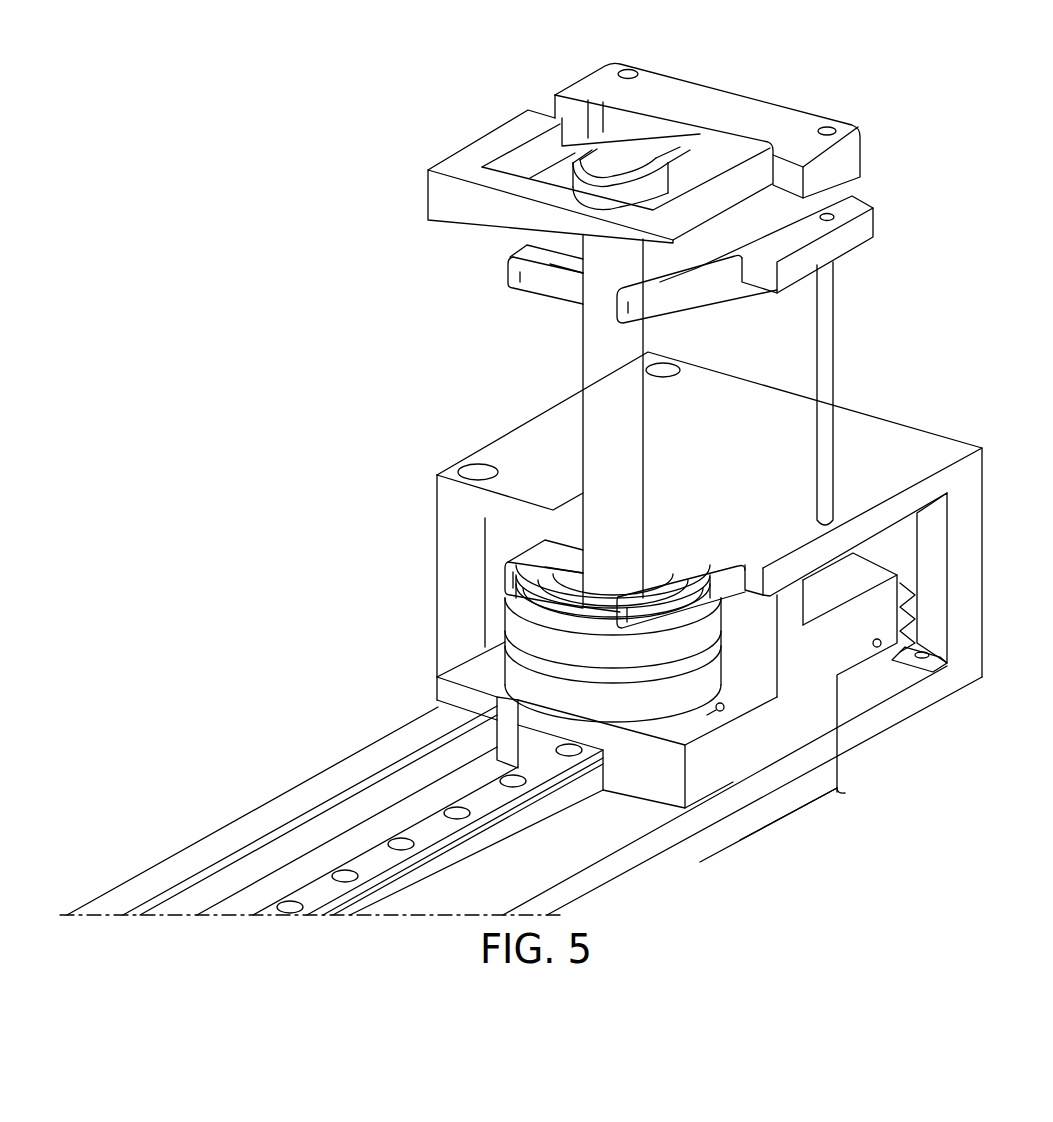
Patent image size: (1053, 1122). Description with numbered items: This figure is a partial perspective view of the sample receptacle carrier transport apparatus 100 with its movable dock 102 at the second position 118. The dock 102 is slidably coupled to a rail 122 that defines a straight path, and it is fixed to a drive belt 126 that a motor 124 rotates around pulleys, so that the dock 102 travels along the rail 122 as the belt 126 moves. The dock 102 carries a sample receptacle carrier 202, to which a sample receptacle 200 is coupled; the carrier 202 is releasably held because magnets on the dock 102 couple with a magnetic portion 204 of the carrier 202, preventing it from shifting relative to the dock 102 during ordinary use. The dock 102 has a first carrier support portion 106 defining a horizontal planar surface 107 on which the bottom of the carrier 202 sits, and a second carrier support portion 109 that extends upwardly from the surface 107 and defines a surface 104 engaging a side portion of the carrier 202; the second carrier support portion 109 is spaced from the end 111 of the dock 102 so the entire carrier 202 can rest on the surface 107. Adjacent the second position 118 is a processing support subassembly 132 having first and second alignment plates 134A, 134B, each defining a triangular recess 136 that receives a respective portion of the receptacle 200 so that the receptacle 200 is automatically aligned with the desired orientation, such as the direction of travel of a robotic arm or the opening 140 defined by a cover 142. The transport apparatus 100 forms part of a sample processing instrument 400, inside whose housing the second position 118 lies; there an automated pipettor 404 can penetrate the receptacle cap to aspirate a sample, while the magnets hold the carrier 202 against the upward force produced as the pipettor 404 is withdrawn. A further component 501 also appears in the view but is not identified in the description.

The sample receptacle carrier transport apparatus 100 is at (287, 578).
The movable dock 102 is at (882, 613).
The surface 104 is at (843, 745).
The first carrier support portion 106 is at (721, 712).
The surface 107 is at (822, 785).
The second carrier support portion 109 is at (797, 604).
The end 111 is at (627, 782).
The second position 118 is at (690, 477).
The rail 122 is at (372, 858).
The motor 124 is at (822, 790).
The drive belt 126 is at (172, 866).
The processing support subassembly 132 is at (903, 440).
The first alignment plate 134A is at (507, 583).
The second alignment plate 134B is at (510, 280).
The recess 136 is at (556, 293).
The opening 140 is at (625, 168).
The cover 142 is at (510, 135).
The sample receptacle 200 is at (592, 362).
The sample receptacle carrier 202 is at (507, 607).
The magnetic portion 204 is at (487, 658).
The sample processing instrument 400 is at (853, 207).
The automated pipettor 404 is at (680, 548).
The mounting block 501 is at (785, 112).